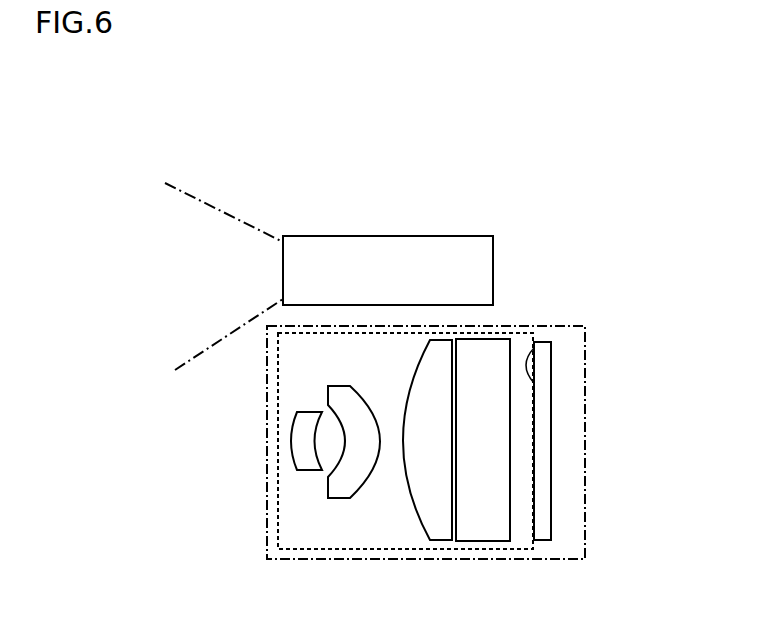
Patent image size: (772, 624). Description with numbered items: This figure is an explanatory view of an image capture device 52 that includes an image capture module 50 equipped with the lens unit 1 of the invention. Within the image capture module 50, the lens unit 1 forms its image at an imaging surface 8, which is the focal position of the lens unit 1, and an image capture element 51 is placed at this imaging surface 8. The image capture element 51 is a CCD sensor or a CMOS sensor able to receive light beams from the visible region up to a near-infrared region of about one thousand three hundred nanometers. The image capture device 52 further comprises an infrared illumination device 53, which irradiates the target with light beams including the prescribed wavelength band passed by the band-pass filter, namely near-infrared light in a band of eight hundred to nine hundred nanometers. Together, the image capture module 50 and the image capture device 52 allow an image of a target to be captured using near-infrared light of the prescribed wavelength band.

The lens unit 1 is at (522, 334).
The imaging surface 8 is at (536, 343).
The image capture module 50 is at (590, 445).
The image capture element 51 is at (543, 395).
The image capture device 52 is at (585, 181).
The infrared illumination device 53 is at (390, 250).